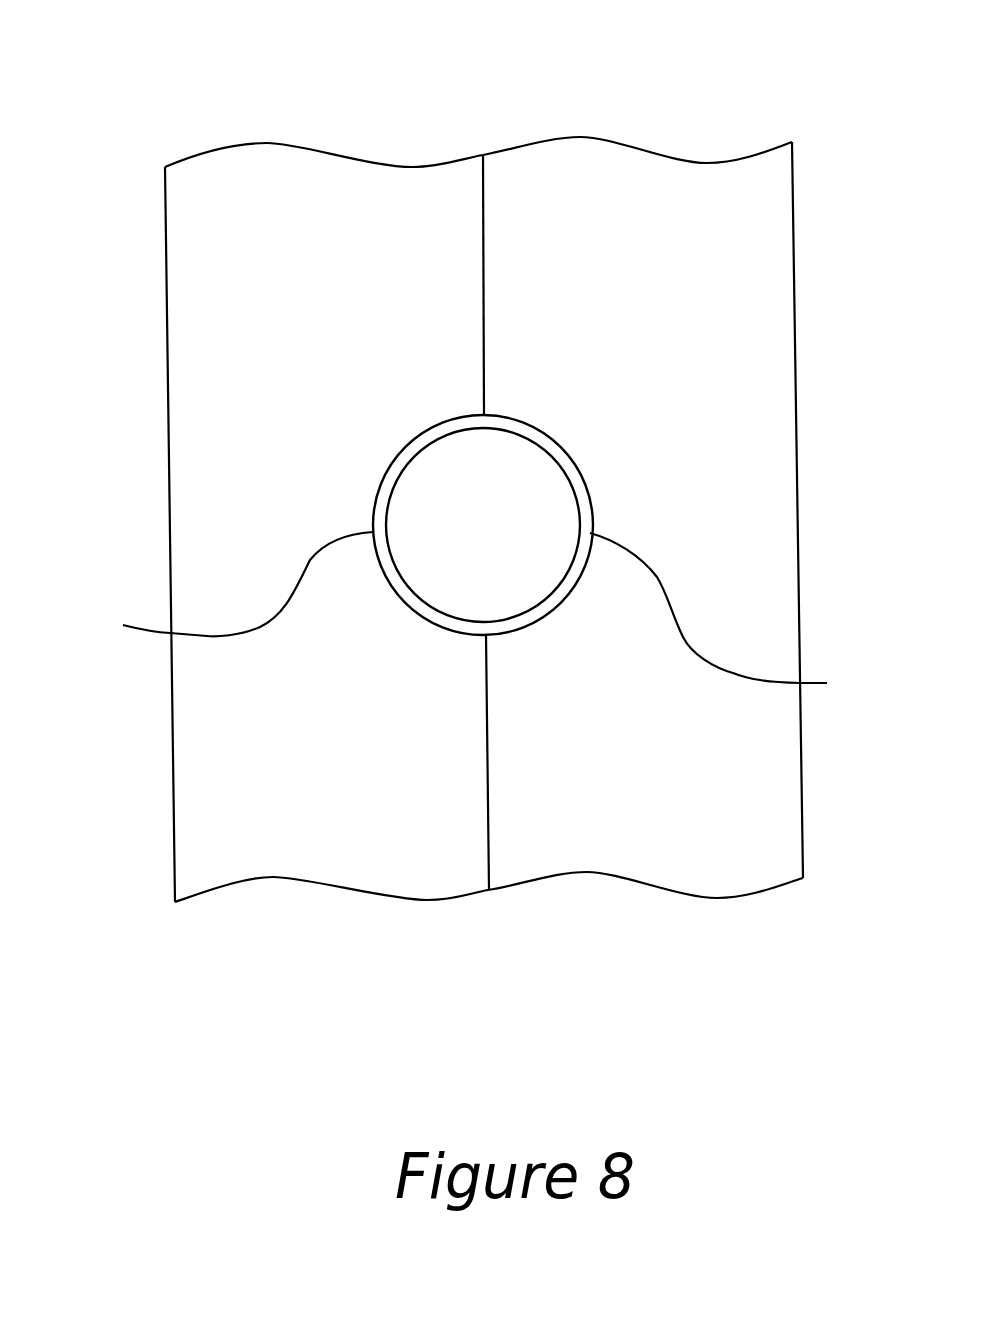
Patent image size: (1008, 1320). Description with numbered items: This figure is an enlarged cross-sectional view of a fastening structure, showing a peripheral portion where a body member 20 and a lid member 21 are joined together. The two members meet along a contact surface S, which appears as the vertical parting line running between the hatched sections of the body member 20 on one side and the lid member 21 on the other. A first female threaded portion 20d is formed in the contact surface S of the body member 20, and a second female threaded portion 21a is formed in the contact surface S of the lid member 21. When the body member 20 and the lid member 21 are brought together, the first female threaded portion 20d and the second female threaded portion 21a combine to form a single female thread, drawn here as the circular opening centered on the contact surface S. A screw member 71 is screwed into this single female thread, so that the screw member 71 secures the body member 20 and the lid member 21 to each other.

The lid member 21 is at (283, 213).
The body member 20 is at (645, 220).
The contact surface S is at (480, 155).
The screw member 71 is at (517, 475).
The second female threaded portion 21a is at (210, 587).
The first female threaded portion 20d is at (745, 618).